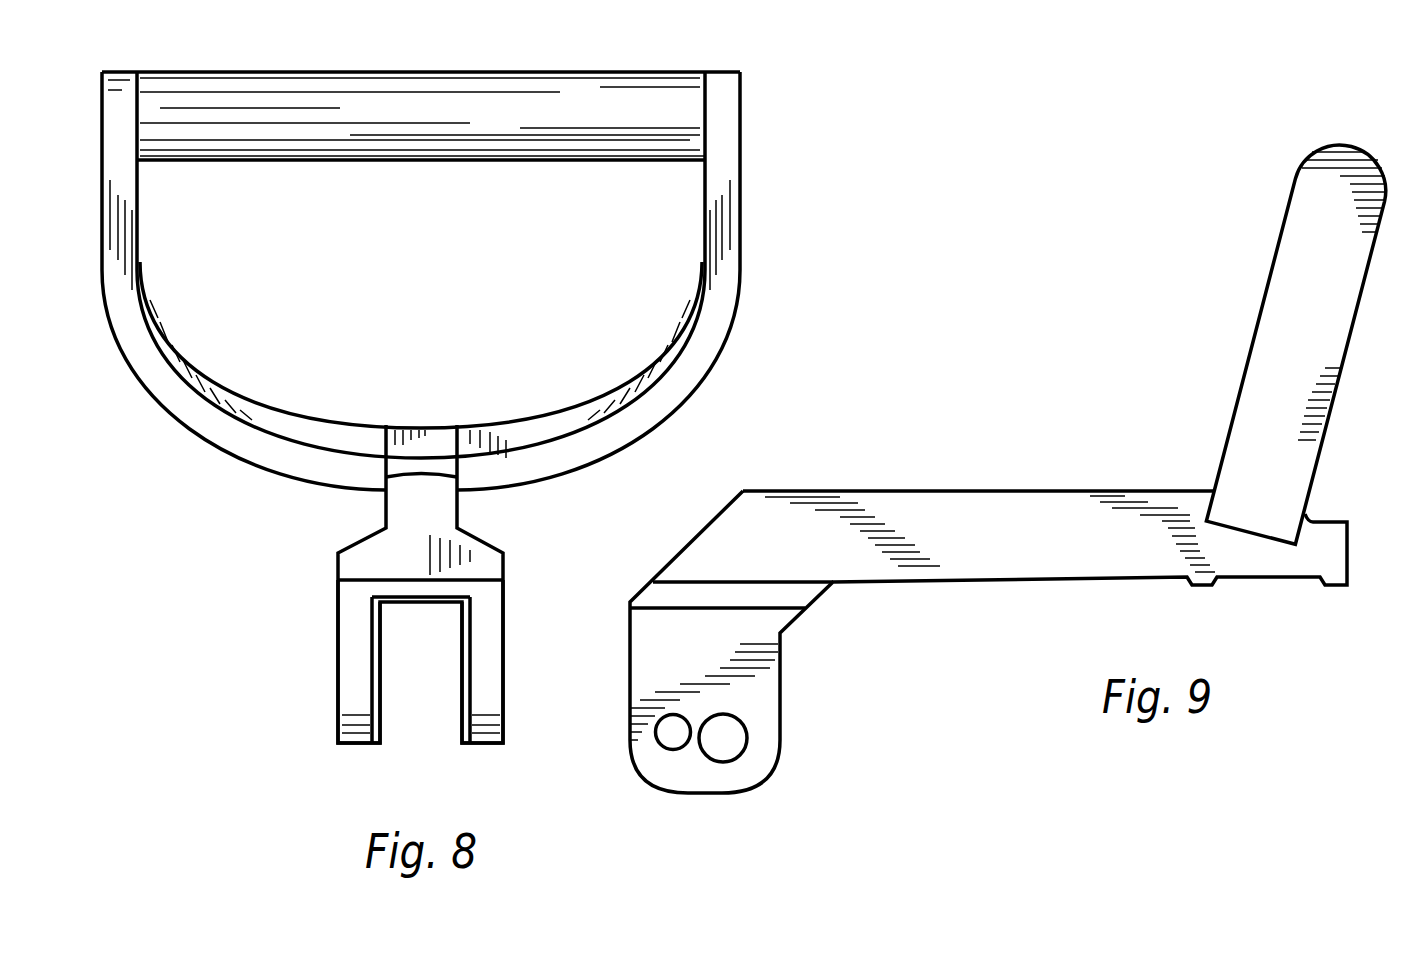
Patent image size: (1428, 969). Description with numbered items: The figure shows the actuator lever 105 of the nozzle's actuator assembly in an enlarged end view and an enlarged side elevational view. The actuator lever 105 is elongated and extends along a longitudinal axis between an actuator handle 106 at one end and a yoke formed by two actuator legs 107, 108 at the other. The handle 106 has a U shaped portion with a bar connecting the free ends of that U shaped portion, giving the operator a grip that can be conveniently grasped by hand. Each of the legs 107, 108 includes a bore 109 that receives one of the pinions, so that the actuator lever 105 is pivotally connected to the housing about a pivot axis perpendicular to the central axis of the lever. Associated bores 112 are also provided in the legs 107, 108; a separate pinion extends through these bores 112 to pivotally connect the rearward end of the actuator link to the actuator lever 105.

In FIG. 9, the actuator lever 105 is at (963, 508).
In FIG. 8, the actuator handle 106 is at (118, 85).
In FIG. 9, the actuator handle 106 is at (1345, 312).
In FIG. 8, the actuator leg 107 is at (350, 677).
In FIG. 8, the actuator leg 108 is at (492, 668).
In FIG. 9, the bore 109 is at (742, 752).
In FIG. 9, the bore 112 is at (677, 750).